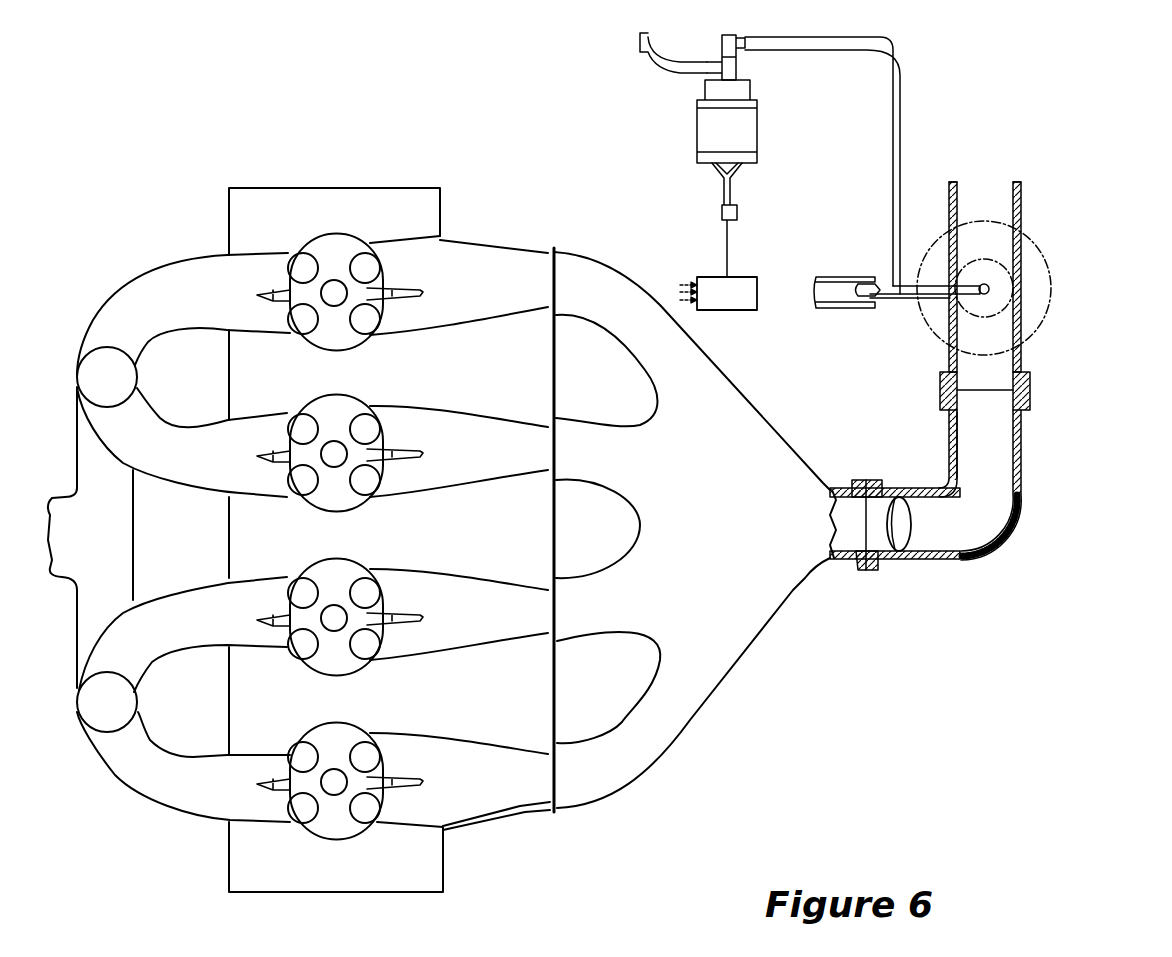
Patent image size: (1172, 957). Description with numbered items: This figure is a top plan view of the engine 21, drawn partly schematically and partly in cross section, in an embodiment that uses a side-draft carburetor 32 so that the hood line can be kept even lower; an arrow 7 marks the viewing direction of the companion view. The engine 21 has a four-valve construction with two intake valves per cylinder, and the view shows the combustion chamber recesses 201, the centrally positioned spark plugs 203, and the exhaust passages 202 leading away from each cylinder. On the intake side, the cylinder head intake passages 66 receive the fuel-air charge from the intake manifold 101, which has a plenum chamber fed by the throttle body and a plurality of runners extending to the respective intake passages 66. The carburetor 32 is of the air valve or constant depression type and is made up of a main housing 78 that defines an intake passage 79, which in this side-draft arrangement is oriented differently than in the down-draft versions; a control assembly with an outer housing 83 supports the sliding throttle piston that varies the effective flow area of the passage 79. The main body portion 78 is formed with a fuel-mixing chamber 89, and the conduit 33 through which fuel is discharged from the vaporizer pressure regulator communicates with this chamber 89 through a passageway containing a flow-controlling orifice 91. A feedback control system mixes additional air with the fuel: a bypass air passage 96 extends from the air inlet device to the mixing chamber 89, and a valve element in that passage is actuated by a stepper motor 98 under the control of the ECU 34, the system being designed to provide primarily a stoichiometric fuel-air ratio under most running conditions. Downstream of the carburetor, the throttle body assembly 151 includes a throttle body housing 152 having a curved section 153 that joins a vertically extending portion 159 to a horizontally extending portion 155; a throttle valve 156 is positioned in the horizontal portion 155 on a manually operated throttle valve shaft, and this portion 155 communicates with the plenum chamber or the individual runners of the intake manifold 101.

The engine 21 is at (333, 172).
The combustion chamber recess 201 is at (313, 246).
The spark plug 203 is at (335, 286).
The exhaust passage 202 is at (222, 313).
The cylinder head intake passage 66 is at (504, 308).
The intake manifold 101 is at (731, 688).
The stepper motor 98 is at (697, 130).
The bypass air passage 96 is at (902, 95).
The fuel-mixing chamber 89 is at (900, 292).
The conduit 33 is at (834, 277).
The flow-controlling orifice 91 is at (858, 293).
The ECU 34 is at (737, 313).
The carburetor 32 is at (1022, 190).
The intake passage 79 is at (955, 183).
The outer housing 83 is at (1050, 286).
The main housing 78 is at (1032, 380).
The elbow conduit 151 is at (1026, 461).
The conduit upstream section 159 is at (1002, 440).
The curved section 153 is at (987, 572).
The throttle body housing 152 is at (940, 562).
The horizontally extending portion 155 is at (982, 531).
The throttle valve 156 is at (917, 562).
The view direction arrow 7 is at (607, 856).